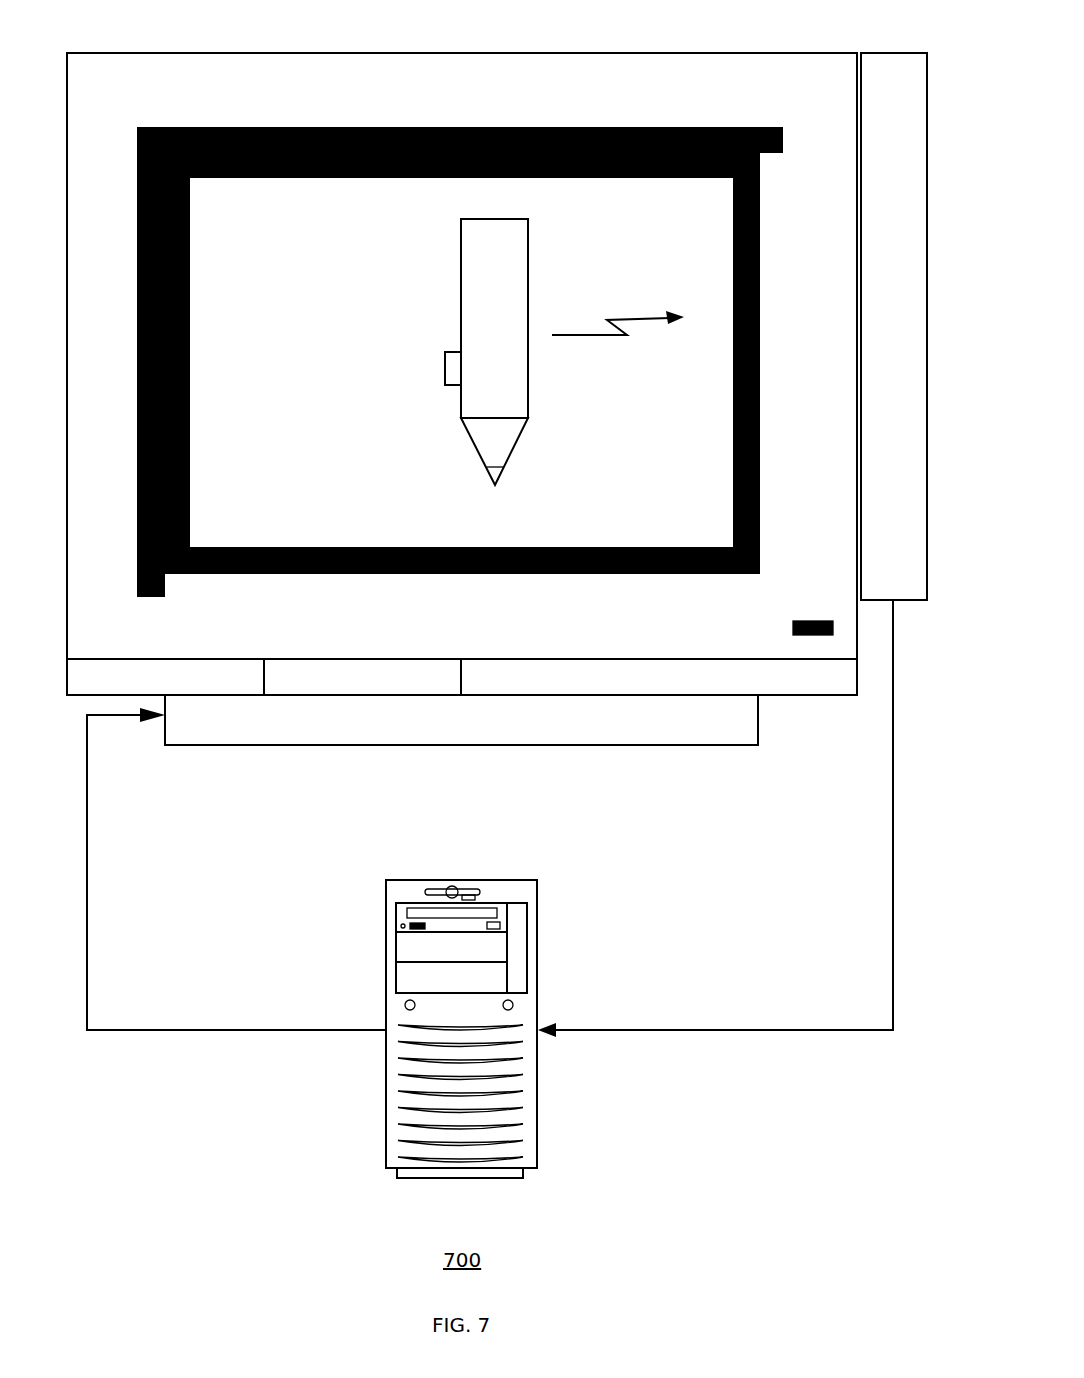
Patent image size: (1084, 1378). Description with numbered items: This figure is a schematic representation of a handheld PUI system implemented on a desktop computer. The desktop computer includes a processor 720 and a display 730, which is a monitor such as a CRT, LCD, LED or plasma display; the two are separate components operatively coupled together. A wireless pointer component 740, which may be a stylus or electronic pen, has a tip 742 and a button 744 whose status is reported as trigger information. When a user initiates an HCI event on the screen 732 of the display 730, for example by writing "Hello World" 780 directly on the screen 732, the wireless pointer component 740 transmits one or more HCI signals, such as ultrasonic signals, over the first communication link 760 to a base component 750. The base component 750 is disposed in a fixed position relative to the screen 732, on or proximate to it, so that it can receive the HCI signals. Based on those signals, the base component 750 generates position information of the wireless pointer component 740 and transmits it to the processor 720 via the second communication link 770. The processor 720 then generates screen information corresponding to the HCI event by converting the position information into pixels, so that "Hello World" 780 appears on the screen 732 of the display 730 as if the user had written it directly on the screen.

The processor 720 is at (474, 1020).
The display 730 is at (462, 389).
The screen 732 is at (460, 362).
The wireless pointer component 740 is at (447, 318).
The tip 742 is at (534, 475).
The button 744 is at (406, 353).
The base component 750 is at (863, 303).
The first communication link 760 is at (625, 295).
The second communication link 770 is at (490, 818).
The "Hello World" 780 is at (334, 410).